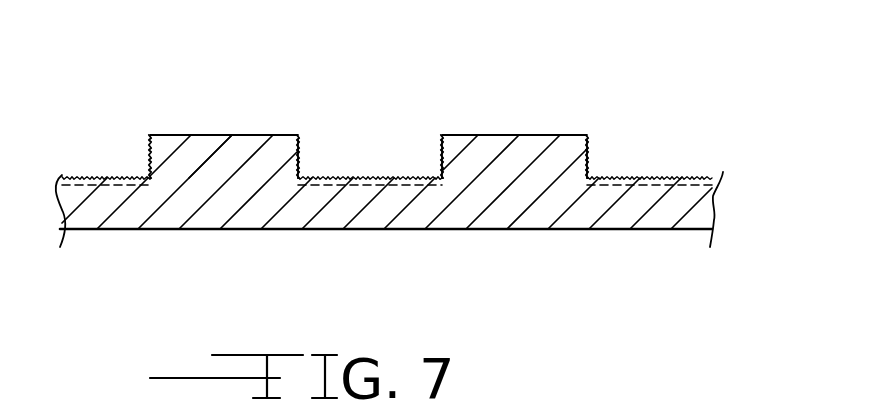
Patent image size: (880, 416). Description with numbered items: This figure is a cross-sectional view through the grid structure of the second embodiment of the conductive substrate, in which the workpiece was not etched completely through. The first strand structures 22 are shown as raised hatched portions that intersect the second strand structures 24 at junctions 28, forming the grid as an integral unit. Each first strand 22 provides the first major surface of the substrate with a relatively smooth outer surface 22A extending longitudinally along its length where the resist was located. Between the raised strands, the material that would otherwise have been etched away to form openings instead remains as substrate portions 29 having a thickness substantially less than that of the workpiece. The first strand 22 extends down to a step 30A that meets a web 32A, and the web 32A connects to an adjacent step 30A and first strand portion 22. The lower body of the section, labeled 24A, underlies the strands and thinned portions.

The first strand structure 22 is at (200, 133).
The relatively smooth outer surface 22A is at (465, 134).
The second strand structure 24 is at (553, 228).
The substrate base layer 24A is at (452, 227).
The junction 28 is at (210, 168).
The substrate portion 29 is at (320, 183).
The step 30A is at (438, 180).
The web 32A is at (370, 182).